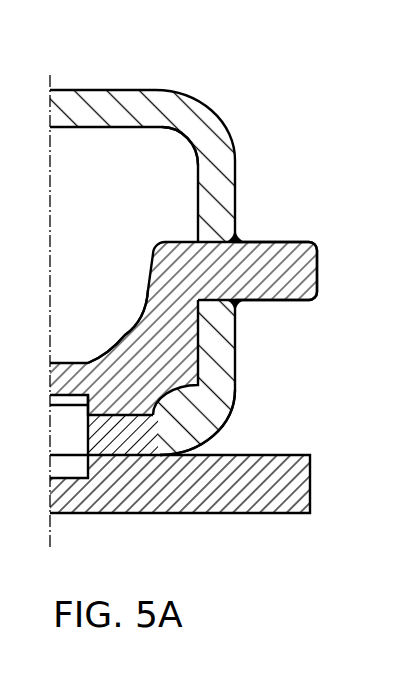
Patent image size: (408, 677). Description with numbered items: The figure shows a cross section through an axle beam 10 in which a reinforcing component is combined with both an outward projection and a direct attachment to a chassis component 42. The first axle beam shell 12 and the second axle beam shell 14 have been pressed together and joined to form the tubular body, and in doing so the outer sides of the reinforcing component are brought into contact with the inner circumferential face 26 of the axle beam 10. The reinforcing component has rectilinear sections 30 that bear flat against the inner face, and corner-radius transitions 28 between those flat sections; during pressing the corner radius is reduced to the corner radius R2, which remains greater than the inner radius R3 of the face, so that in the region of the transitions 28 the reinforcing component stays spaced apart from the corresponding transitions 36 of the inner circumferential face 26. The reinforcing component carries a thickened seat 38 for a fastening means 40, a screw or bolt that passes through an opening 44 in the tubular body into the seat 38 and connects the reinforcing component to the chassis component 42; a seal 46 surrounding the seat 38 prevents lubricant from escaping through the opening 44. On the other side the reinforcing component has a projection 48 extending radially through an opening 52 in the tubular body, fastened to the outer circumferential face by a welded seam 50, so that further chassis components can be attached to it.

The axle beam 10 is at (52, 21).
The first axle beam shell 12 is at (238, 337).
The second axle beam shell 14 is at (145, 90).
The inner circumferential face 26 is at (118, 128).
The transitions 28 is at (117, 360).
The rectilinear sections 30 is at (150, 278).
The transitions 36 is at (212, 112).
The seat 38 is at (70, 358).
The fastening means 40 is at (137, 488).
The chassis component 42 is at (258, 513).
The opening 44 is at (113, 513).
The seal 46 is at (168, 513).
The projection 48 is at (272, 242).
The welded seam 50 is at (237, 238).
The opening 52 is at (207, 135).
The corner radius R2 is at (128, 346).
The inner radius R3 is at (228, 428).